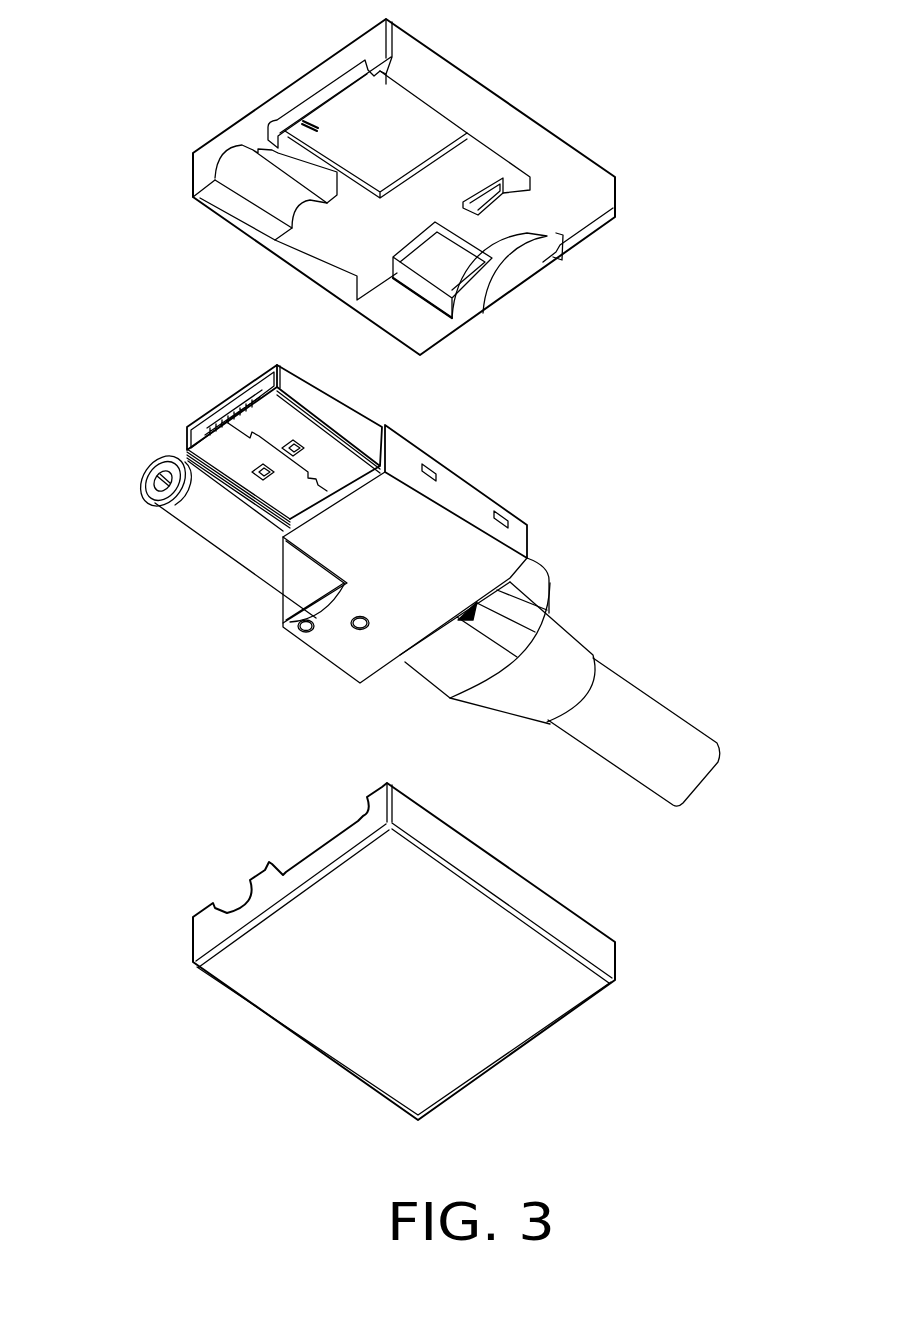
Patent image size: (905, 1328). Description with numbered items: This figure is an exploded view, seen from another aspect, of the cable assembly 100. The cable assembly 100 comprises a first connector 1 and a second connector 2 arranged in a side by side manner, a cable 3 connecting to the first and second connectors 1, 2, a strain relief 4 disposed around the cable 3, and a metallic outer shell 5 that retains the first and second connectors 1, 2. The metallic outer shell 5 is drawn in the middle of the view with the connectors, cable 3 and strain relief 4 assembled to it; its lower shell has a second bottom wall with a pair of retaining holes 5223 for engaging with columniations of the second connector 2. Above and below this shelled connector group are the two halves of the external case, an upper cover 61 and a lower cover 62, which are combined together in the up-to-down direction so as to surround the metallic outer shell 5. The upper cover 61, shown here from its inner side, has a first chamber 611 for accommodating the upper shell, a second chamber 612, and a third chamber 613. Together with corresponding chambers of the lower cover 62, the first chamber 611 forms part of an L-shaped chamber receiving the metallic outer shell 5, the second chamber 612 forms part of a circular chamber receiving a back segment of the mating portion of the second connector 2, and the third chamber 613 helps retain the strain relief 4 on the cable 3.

The cable assembly 100 is at (700, 99).
The first connector 1 is at (318, 405).
The second connector 2 is at (228, 533).
The cable 3 is at (623, 708).
The strain relief 4 is at (557, 650).
The metallic outer shell 5 is at (348, 557).
The retaining holes 5223 is at (303, 630).
The upper cover 61 is at (518, 80).
The first chamber 611 is at (362, 118).
The second chamber 612 is at (243, 173).
The third chamber 613 is at (492, 242).
The lower cover 62 is at (501, 842).